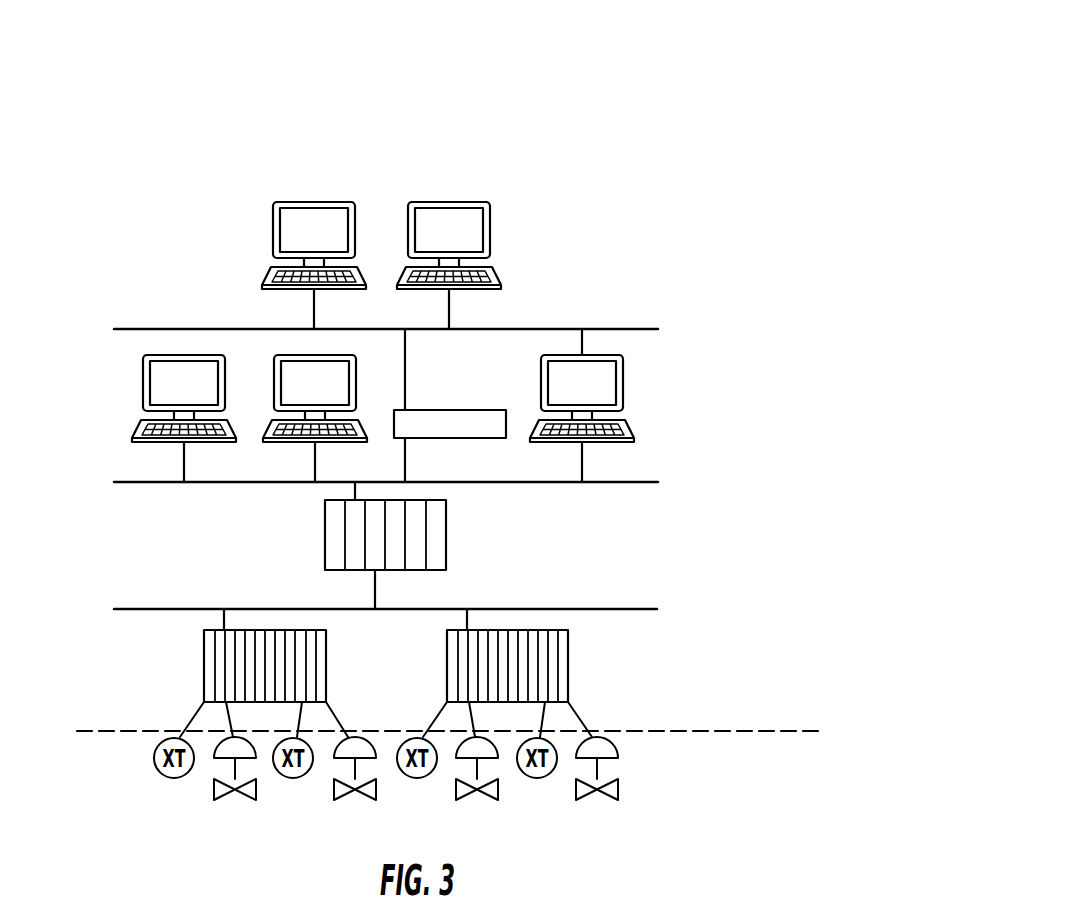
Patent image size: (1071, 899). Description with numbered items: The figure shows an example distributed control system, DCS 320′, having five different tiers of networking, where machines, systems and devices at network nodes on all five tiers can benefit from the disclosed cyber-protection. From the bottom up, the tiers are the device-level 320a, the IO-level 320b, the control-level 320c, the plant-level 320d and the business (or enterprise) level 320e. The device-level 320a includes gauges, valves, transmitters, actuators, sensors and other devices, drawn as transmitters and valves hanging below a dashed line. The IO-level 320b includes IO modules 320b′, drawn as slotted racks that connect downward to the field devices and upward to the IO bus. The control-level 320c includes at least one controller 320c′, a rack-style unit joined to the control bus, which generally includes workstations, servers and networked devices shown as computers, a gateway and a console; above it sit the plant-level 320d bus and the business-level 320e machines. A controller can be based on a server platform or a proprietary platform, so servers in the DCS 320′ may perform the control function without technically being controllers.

The distributed control system 320′ is at (691, 87).
The business level 320e is at (488, 265).
The plant-level 320d is at (399, 311).
The control-level 320c is at (448, 406).
The controller 320c′ is at (325, 534).
The IO-level 320b is at (385, 590).
The IO modules 320b′ is at (718, 623).
The device-level 320a is at (449, 765).